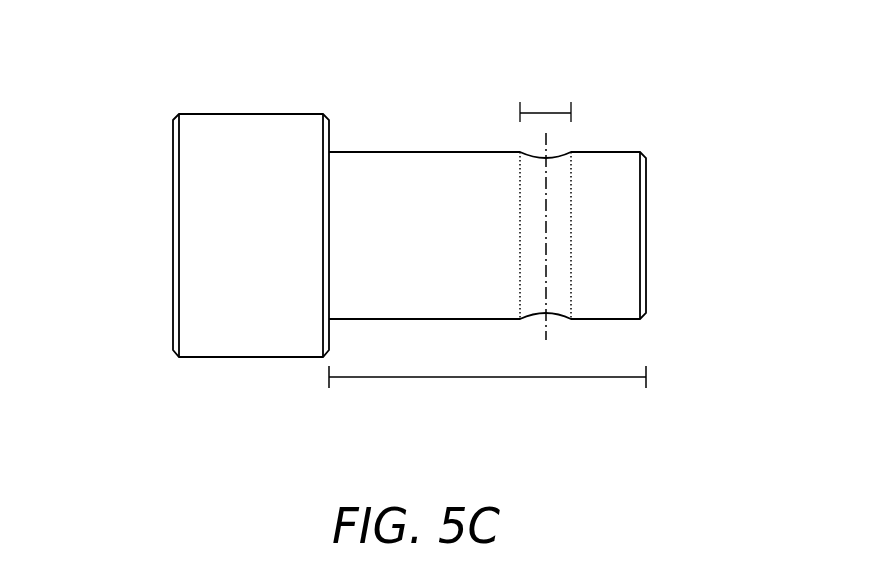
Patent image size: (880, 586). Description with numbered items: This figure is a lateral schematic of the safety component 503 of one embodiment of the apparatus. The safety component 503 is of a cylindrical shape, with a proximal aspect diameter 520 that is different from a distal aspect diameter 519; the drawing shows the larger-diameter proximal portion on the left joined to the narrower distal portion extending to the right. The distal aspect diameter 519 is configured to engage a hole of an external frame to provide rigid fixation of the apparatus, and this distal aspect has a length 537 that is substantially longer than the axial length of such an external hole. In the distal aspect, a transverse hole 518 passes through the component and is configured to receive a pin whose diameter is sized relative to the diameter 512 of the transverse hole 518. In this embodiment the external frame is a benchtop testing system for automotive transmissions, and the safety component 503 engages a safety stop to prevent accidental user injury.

The safety component 503 is at (138, 78).
The proximal aspect diameter 520 is at (212, 132).
The distal aspect diameter 519 is at (640, 232).
The transverse hole 518 is at (597, 110).
The diameter of the transverse hole 512 is at (546, 108).
The length 537 is at (487, 378).